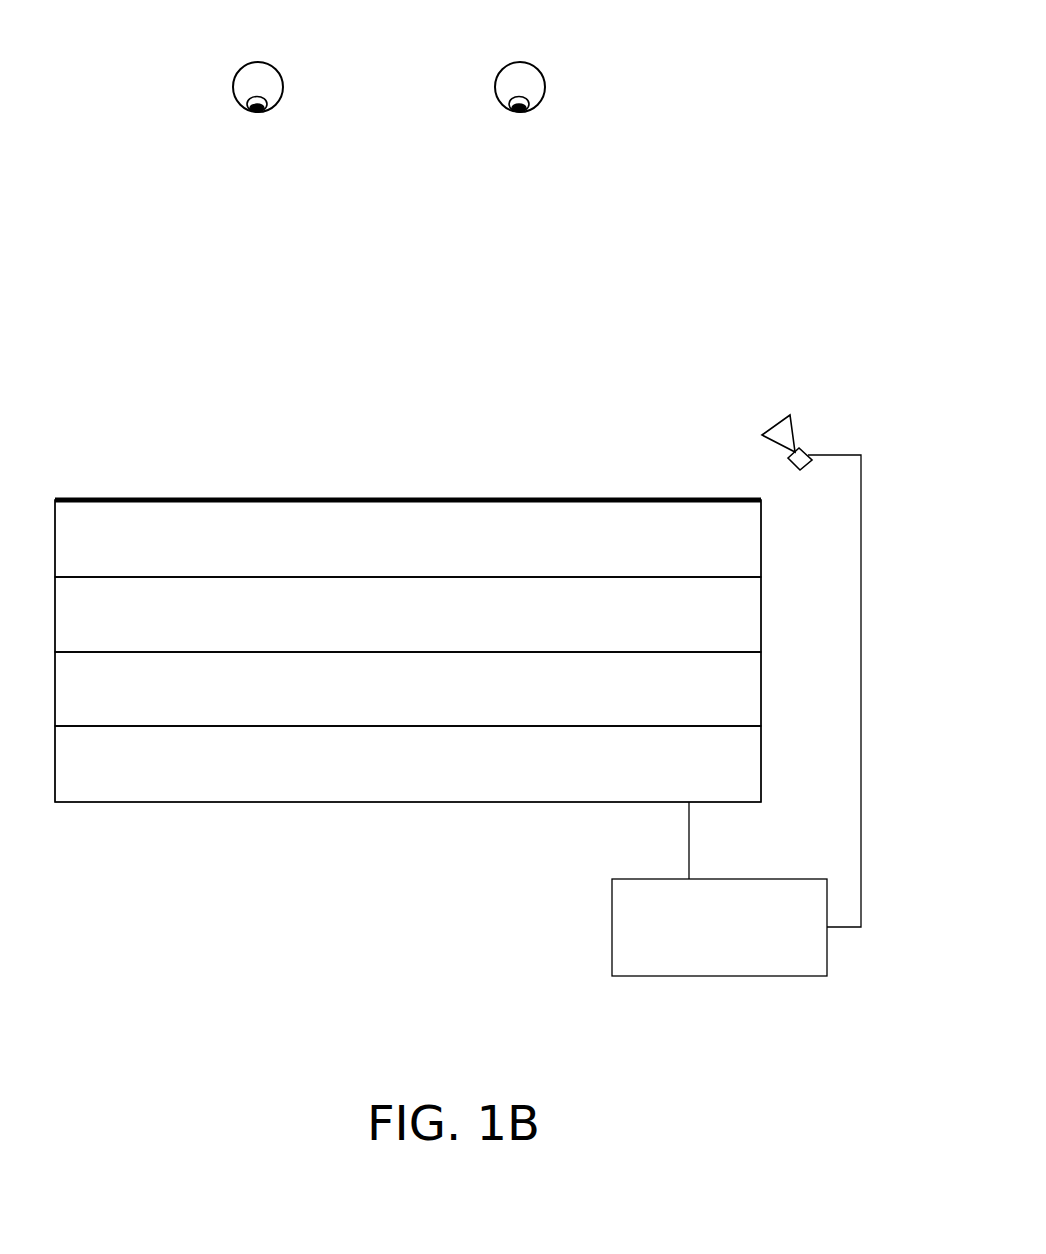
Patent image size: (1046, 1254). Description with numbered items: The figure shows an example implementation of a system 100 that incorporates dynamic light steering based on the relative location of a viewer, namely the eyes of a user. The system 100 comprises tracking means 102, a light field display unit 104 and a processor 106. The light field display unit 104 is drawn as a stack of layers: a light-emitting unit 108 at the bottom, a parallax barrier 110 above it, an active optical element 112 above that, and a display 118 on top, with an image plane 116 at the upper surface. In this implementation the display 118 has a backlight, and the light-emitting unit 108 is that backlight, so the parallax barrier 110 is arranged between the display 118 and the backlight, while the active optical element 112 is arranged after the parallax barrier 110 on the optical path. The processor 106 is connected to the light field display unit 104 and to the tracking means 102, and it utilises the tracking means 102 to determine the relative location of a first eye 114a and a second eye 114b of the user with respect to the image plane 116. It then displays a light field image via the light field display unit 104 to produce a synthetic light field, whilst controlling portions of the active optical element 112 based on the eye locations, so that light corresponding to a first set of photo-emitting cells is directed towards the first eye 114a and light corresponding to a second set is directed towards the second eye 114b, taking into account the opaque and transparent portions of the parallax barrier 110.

The system 100 is at (734, 159).
The tracking means 102 is at (806, 445).
The light field display unit 104 is at (160, 803).
The processor 106 is at (741, 937).
The light-emitting unit 108 is at (747, 775).
The parallax barrier 110 is at (747, 701).
The active optical element 112 is at (747, 626).
The first eye 114a is at (235, 92).
The second eye 114b is at (536, 93).
The image plane 116 is at (127, 500).
The display 118 is at (747, 549).